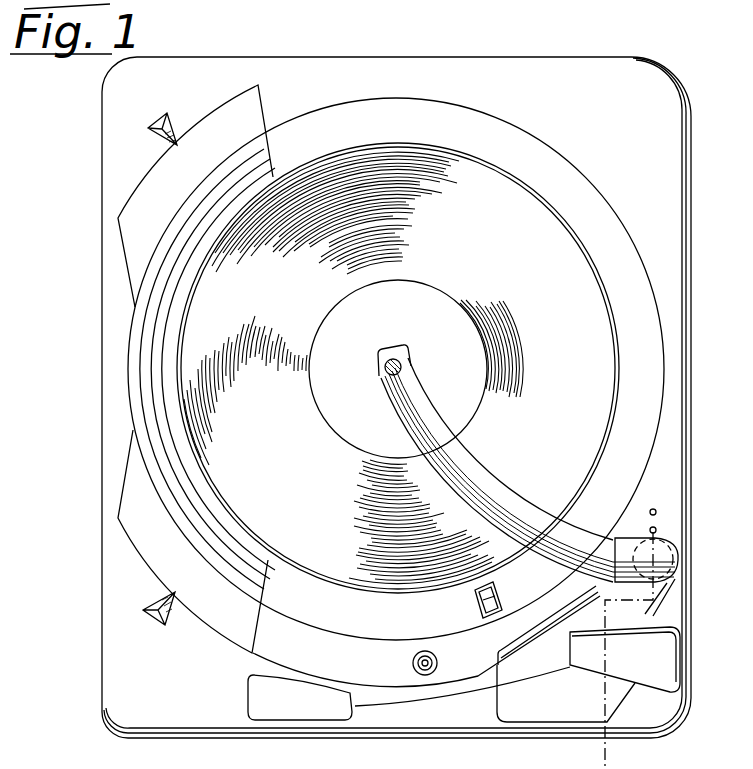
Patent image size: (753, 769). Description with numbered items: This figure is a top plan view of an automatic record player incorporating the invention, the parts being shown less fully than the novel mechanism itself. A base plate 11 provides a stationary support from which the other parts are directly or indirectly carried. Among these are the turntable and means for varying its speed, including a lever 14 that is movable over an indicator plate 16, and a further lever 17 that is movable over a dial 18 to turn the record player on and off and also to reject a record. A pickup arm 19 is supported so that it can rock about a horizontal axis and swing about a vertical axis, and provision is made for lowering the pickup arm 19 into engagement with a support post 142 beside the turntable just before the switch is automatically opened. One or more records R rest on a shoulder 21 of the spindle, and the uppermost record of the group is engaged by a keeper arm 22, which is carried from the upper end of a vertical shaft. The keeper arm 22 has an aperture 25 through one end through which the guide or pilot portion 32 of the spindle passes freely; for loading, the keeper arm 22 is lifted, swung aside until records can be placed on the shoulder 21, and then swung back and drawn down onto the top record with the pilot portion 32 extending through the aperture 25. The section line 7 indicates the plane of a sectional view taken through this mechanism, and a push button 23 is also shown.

The base plate 11 is at (110, 685).
The lever 14 is at (148, 128).
The indicator plate 16 is at (148, 181).
The lever 17 is at (146, 614).
The dial 18 is at (126, 535).
The pickup arm 19 is at (253, 714).
The shoulder 21 is at (462, 718).
The keeper arm 22 is at (487, 490).
The push button 23 is at (647, 674).
The aperture 25 is at (403, 372).
The pilot portion 32 is at (385, 373).
The support post 142 is at (412, 663).
The records R is at (535, 228).
The section line 7- 7 is at (657, 517).